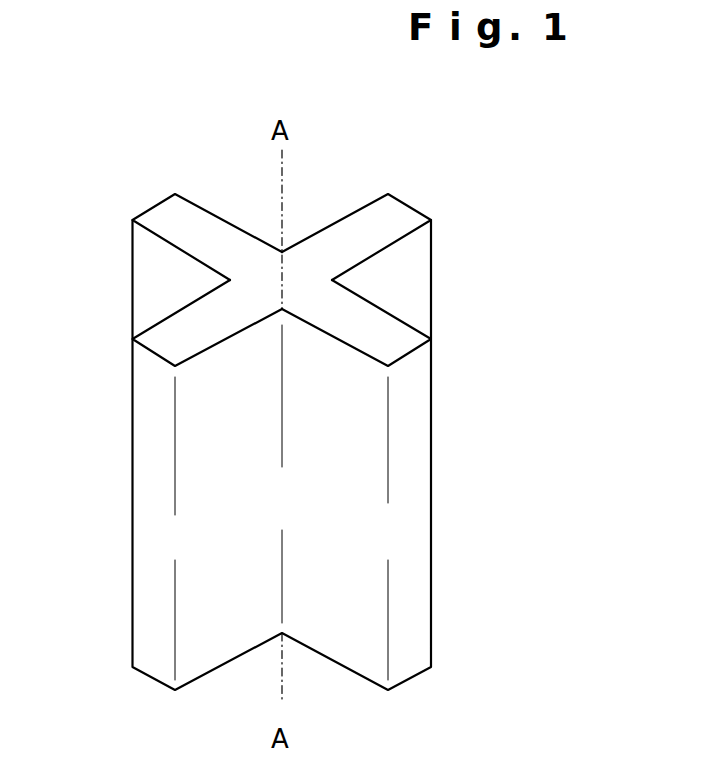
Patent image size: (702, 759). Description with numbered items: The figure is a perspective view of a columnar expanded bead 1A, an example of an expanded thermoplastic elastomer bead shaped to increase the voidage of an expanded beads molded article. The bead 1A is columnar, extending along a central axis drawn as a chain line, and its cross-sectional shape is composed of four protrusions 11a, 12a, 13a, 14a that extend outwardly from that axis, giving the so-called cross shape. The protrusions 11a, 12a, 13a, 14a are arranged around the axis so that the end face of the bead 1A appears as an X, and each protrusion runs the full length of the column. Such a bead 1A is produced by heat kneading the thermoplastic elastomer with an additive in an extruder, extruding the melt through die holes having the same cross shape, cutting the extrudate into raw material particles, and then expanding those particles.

The columnar expanded bead 1A is at (477, 144).
The protrusion 11a is at (387, 213).
The protrusion 12a is at (392, 335).
The protrusion 13a is at (171, 335).
The protrusion 14a is at (170, 220).